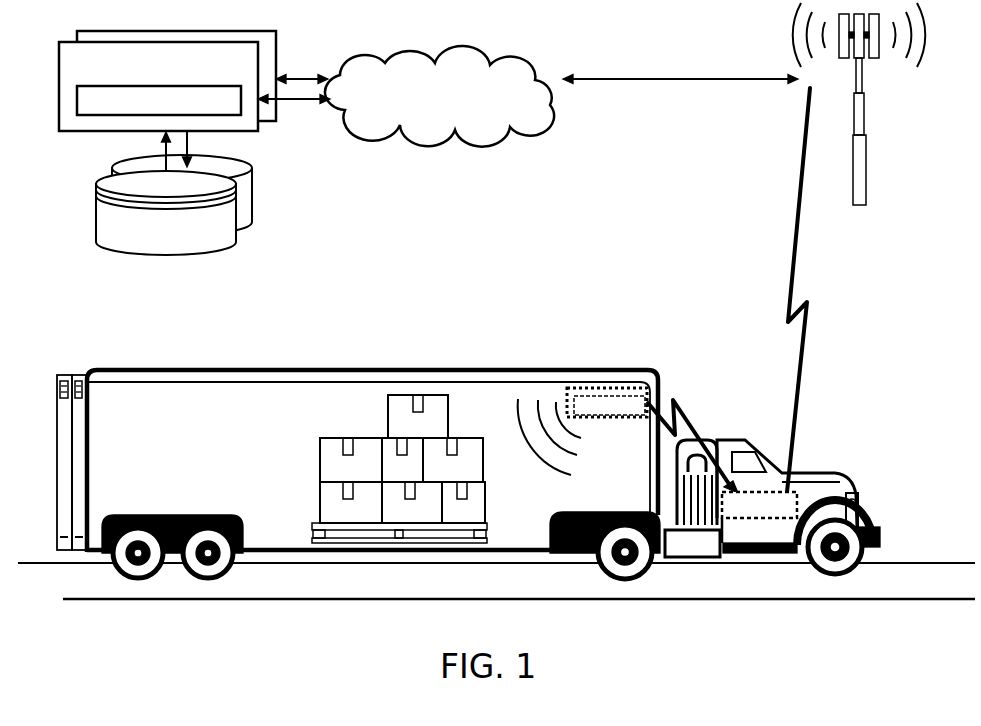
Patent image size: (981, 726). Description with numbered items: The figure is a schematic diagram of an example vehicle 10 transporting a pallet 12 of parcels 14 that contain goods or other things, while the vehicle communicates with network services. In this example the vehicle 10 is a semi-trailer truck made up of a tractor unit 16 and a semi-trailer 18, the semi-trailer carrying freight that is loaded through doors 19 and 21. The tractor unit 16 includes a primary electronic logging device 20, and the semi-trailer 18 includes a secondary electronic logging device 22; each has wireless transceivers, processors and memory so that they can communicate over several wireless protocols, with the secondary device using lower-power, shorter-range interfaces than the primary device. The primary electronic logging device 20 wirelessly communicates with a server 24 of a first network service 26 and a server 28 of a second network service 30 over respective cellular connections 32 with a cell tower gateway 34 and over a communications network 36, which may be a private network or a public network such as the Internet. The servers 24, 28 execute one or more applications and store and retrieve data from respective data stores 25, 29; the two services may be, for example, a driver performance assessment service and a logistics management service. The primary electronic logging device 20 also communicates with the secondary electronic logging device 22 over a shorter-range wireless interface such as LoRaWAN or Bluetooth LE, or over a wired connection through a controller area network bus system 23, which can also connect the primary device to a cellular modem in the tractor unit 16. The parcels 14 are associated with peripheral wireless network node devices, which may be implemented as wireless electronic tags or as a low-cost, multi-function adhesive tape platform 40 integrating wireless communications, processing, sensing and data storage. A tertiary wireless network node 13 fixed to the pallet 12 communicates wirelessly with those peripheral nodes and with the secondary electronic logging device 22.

The vehicle 10 is at (413, 343).
The pallet 12 is at (313, 527).
The tertiary wireless network node 13 is at (480, 525).
The parcels 14 is at (282, 456).
The tractor unit 16 is at (838, 477).
The semi-trailer 18 is at (155, 427).
The door 19 is at (80, 375).
The primary electronic logging device 20 is at (765, 518).
The door 21 is at (57, 405).
The secondary electronic logging device 22 is at (617, 393).
The controller area network bus system 23 is at (693, 557).
The server 24 is at (248, 132).
The data store 25 is at (212, 248).
The first network service 26 is at (62, 17).
The server 28 is at (276, 122).
The data store 29 is at (245, 218).
The second network service 30 is at (168, 3).
The cellular connection 32 is at (793, 268).
The cell tower gateway 34 is at (857, 135).
The communications network 36 is at (508, 62).
The adhesive tape platform 40 is at (350, 438).